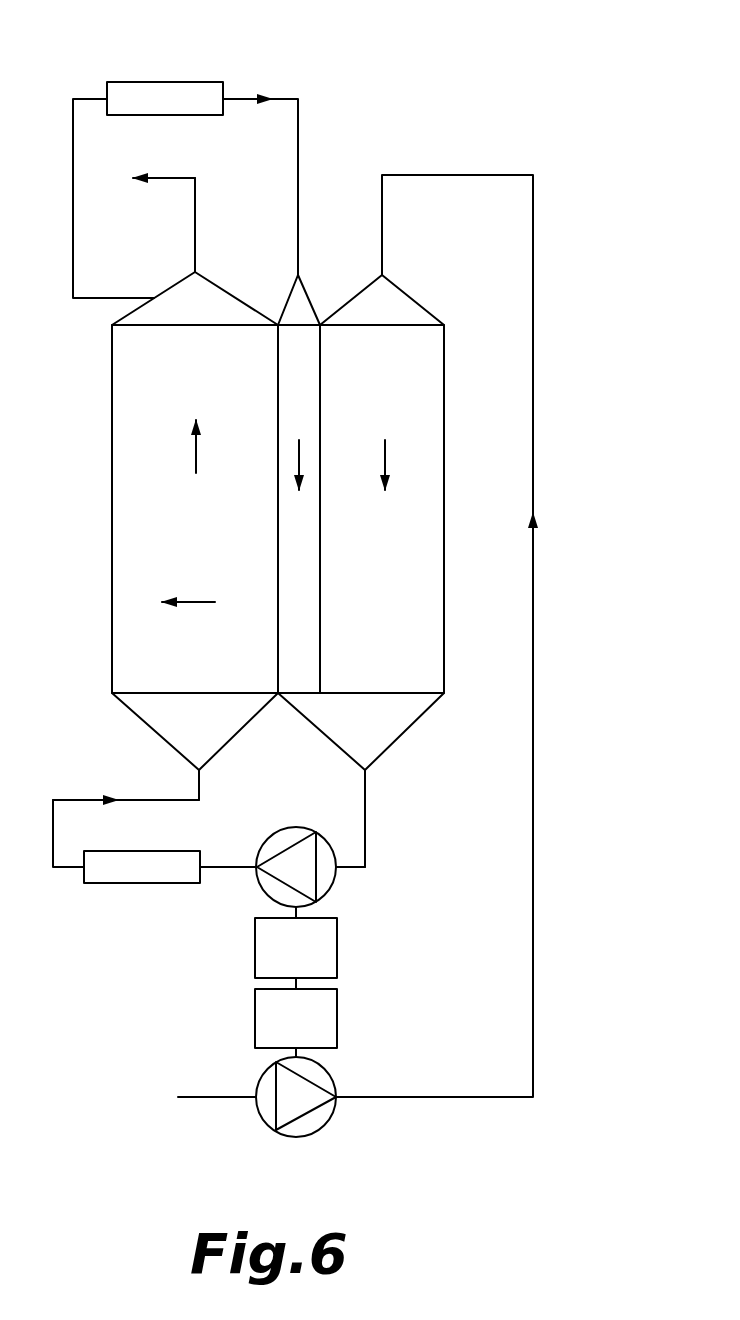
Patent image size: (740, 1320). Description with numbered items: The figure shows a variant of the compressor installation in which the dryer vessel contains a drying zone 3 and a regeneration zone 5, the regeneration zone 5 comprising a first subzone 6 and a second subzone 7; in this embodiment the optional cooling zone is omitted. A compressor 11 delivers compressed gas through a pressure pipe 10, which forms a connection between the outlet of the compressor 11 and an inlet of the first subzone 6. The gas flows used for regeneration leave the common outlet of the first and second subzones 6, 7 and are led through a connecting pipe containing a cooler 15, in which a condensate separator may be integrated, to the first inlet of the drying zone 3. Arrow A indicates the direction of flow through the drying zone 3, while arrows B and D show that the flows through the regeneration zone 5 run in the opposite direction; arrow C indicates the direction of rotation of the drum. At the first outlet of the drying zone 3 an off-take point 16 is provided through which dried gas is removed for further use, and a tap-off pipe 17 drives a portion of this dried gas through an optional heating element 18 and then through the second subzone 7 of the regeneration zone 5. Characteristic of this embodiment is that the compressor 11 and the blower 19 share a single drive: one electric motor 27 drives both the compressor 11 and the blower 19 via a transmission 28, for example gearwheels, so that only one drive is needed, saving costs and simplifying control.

The drying zone 3 is at (152, 535).
The regeneration zone 5 is at (385, 705).
The first subzone 6 is at (432, 370).
The second subzone 7 is at (302, 633).
The pressure pipe 10 is at (533, 1018).
The compressor 11 is at (318, 1128).
The cooler 15 is at (113, 883).
The off-take point 16 is at (195, 272).
The tap-off pipe 17 is at (92, 298).
The heating element 18 is at (197, 82).
The blower 19 is at (333, 887).
The electric motor 27 is at (337, 1020).
The transmission 28 is at (337, 955).